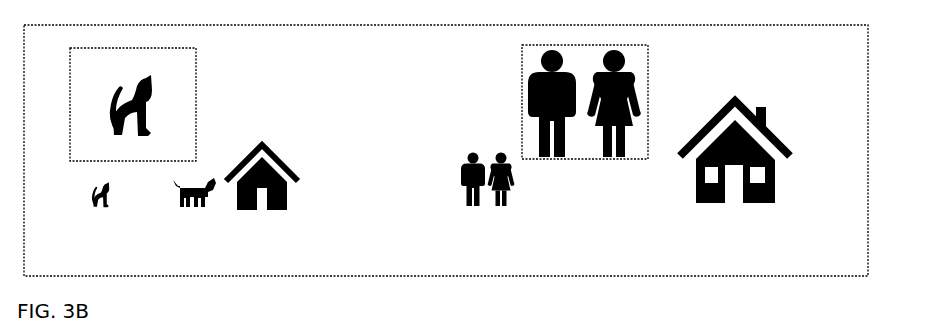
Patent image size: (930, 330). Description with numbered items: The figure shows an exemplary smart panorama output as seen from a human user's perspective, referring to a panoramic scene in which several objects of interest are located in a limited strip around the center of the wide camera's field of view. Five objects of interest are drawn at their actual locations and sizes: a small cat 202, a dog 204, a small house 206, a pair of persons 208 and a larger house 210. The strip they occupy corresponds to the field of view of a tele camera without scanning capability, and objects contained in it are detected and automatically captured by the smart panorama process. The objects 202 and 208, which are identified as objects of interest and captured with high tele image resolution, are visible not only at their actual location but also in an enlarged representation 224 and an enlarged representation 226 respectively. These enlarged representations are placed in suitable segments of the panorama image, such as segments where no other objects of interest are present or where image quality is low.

The object of interest 202 is at (99, 215).
The object of interest 204 is at (188, 216).
The object of interest 206 is at (259, 216).
The object of interest 208 is at (488, 220).
The object of interest 210 is at (737, 220).
The enlarged representation 224 is at (66, 167).
The enlarged representation 226 is at (596, 167).